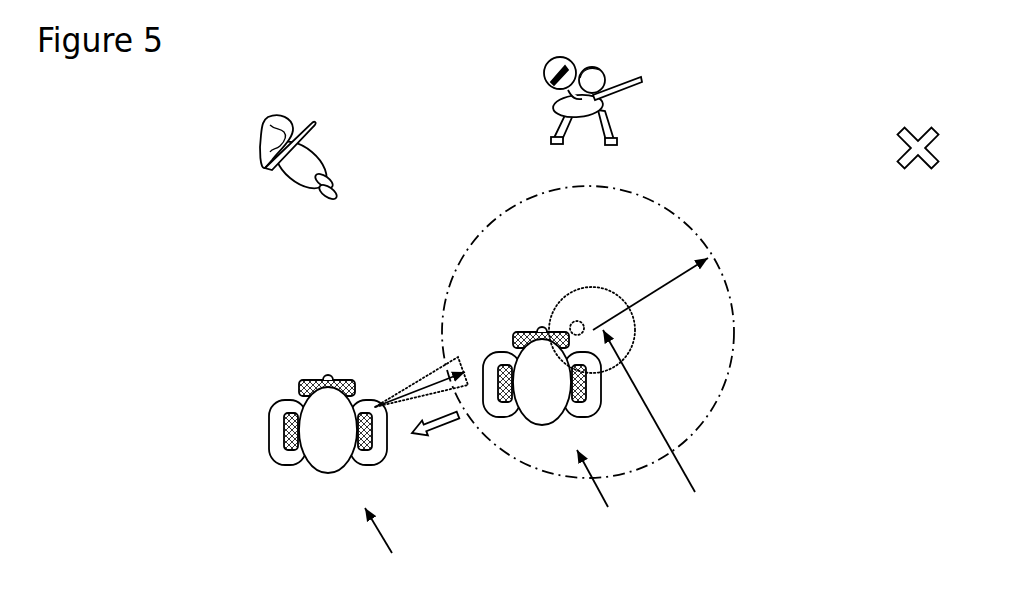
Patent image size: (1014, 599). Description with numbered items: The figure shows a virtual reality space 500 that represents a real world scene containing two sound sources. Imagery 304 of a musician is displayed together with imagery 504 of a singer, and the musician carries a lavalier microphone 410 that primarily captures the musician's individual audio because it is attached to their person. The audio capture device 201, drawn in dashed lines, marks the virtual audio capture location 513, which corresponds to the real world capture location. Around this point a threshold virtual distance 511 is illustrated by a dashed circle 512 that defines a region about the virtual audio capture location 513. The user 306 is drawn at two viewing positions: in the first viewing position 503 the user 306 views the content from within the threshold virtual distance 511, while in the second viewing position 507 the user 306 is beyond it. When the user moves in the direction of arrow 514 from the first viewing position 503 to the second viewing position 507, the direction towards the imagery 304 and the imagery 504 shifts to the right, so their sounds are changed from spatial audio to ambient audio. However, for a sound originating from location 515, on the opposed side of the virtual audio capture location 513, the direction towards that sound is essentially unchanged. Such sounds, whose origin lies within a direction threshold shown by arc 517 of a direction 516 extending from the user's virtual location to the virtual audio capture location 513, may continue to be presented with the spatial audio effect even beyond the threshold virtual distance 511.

The virtual reality space 500 is at (220, 258).
The imagery of the singer 504 is at (270, 123).
The imagery of the musician 304 is at (596, 75).
The lavalier microphone 410 is at (548, 62).
The location of sound origin 515 is at (918, 172).
The dashed circle 512 is at (735, 350).
The user 306 is at (322, 460).
The audio capture device 201 is at (627, 350).
The threshold virtual distance 511 is at (677, 278).
The virtual audio capture location 513 is at (664, 426).
The first viewing position 503 is at (607, 494).
The second viewing position 507 is at (392, 547).
The arc 517 is at (423, 378).
The direction 516 is at (400, 393).
The arrow 514 is at (438, 430).